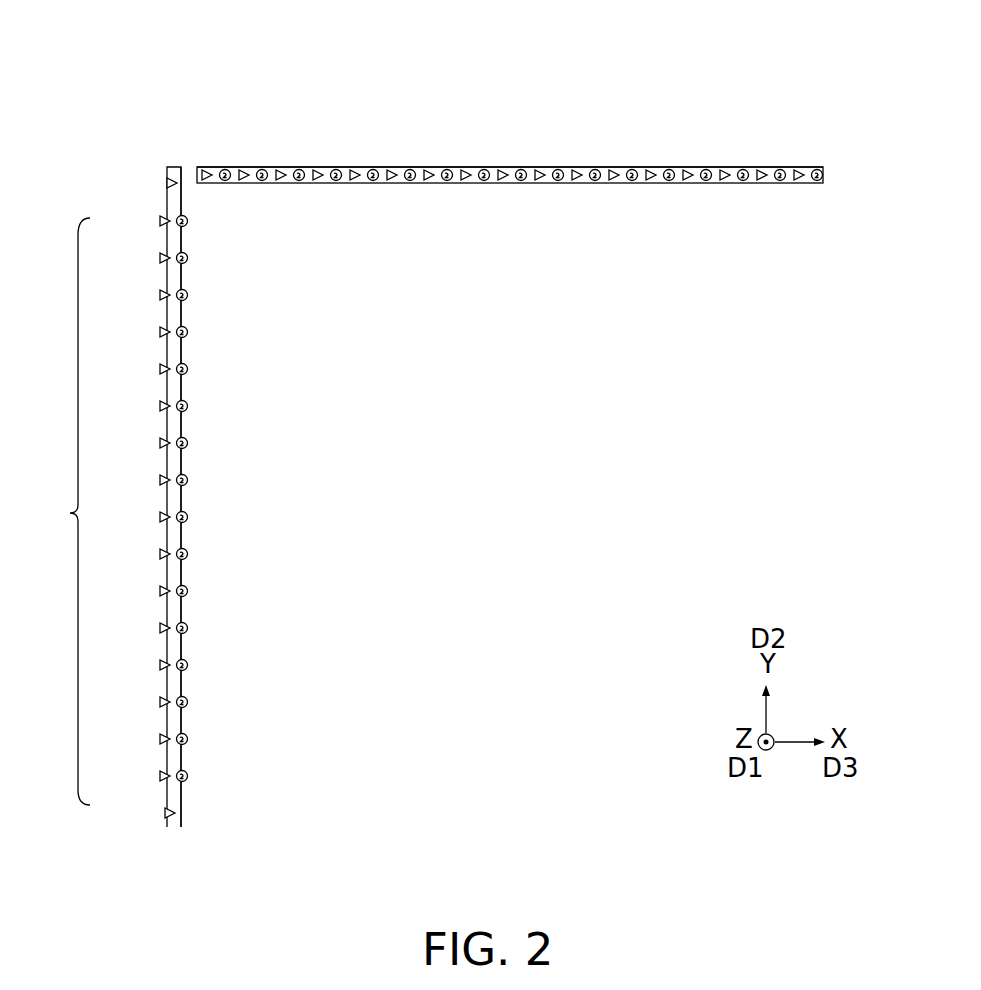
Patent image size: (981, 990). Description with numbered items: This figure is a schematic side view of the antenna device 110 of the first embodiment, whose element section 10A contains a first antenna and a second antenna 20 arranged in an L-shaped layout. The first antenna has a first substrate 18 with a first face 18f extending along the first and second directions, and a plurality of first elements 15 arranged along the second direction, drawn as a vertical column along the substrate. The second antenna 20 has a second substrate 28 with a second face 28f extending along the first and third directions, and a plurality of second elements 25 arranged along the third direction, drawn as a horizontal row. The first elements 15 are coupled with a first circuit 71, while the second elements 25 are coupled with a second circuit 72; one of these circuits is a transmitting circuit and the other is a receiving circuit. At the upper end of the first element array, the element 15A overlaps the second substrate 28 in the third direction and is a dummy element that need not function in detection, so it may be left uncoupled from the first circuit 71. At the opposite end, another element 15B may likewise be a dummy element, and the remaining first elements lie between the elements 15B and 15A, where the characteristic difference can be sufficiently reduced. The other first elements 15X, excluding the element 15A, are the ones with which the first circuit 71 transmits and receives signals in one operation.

The element section 10A is at (132, 102).
The antenna device 110 is at (875, 88).
The second antenna 20 is at (858, 149).
The first elements 15 is at (128, 518).
The element 15A is at (162, 180).
The element 15B is at (162, 829).
The other first elements 15X is at (52, 511).
The first substrate 18 is at (173, 612).
The first face 18f is at (182, 568).
The first circuit 71 is at (187, 224).
The second circuit 72 is at (228, 183).
The second elements 25 is at (207, 167).
The second substrate 28 is at (730, 167).
The second face 28f is at (617, 167).